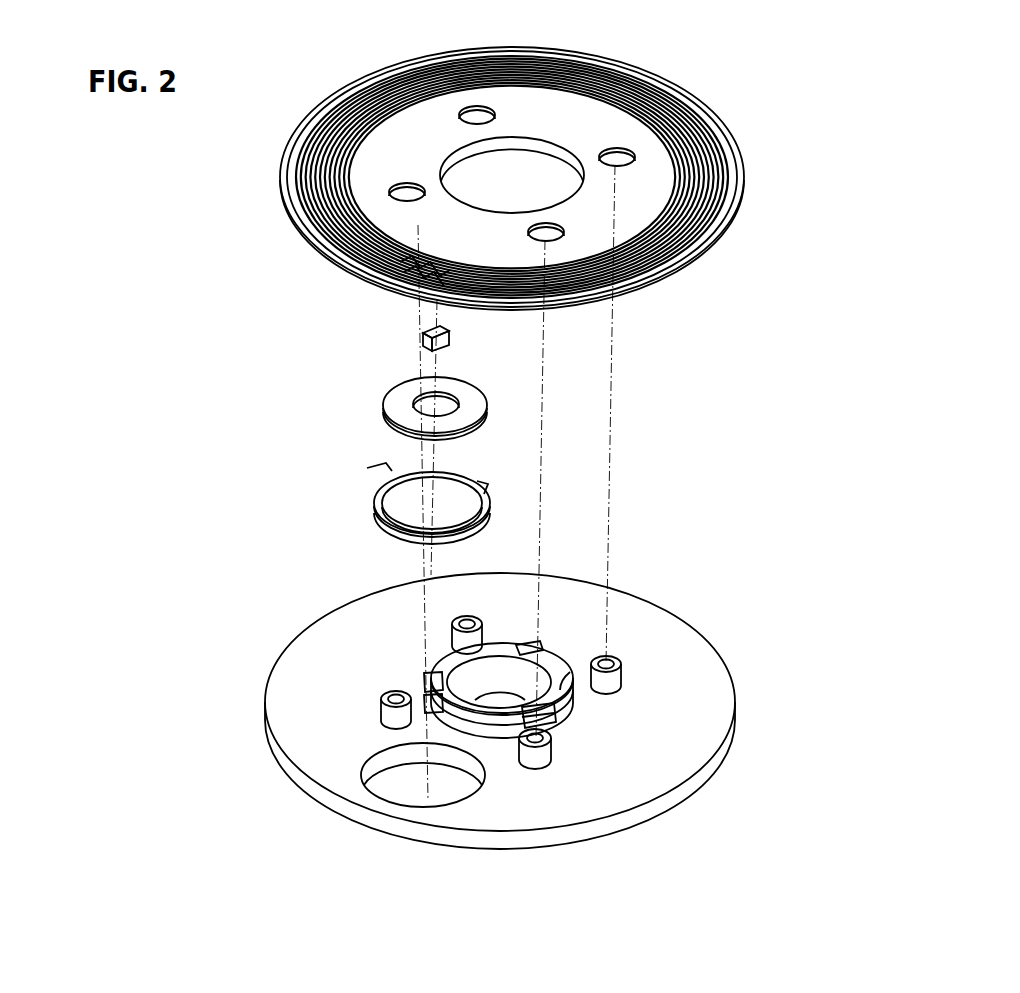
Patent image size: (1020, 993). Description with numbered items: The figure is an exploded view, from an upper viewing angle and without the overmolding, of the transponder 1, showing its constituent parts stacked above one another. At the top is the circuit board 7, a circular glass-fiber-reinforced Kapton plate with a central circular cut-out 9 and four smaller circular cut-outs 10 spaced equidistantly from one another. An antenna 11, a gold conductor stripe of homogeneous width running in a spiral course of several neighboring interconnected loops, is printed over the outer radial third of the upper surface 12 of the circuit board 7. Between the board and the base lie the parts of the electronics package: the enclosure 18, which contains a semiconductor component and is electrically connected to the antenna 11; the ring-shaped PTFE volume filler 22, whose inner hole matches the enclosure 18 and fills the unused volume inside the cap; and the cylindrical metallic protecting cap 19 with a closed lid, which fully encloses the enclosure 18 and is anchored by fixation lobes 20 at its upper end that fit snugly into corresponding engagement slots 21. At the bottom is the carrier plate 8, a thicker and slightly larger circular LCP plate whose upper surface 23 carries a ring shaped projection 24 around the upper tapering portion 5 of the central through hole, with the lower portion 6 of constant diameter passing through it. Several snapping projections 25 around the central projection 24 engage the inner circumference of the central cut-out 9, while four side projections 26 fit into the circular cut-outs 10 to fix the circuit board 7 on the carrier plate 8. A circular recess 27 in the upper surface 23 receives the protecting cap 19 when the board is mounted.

The transponder 1 is at (158, 448).
The upper tapering portion 5 is at (475, 701).
The lower portion 6 is at (508, 684).
The circuit board 7 is at (795, 238).
The carrier plate 8 is at (778, 797).
The central circular cut-out 9 is at (495, 166).
The circular cut-outs 10 is at (559, 123).
The antenna 11 is at (451, 177).
The upper surface 12 is at (472, 178).
The enclosure 18 is at (422, 340).
The protecting cap 19 is at (380, 530).
The fixation lobes 20 is at (390, 478).
The engagement slots 21 is at (467, 295).
The volume filler 22 is at (396, 408).
The upper surface 23 is at (546, 711).
The ring shaped projection 24 is at (662, 768).
The snapping projections 25 is at (443, 701).
The side projections 26 is at (496, 734).
The circular recess 27 is at (378, 812).